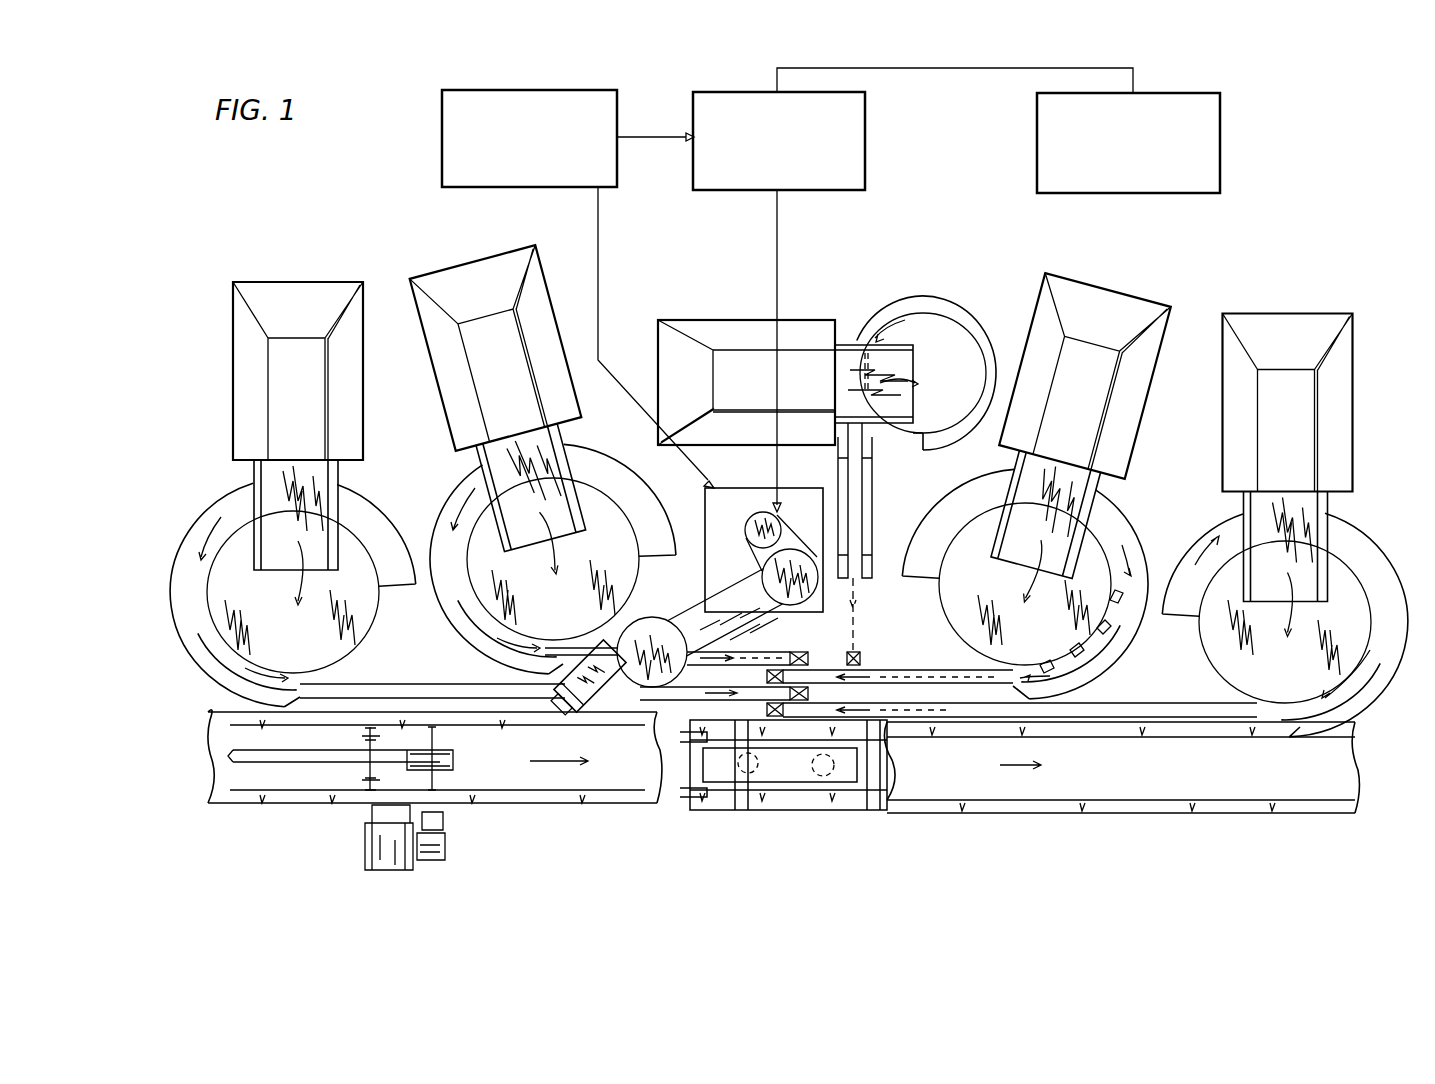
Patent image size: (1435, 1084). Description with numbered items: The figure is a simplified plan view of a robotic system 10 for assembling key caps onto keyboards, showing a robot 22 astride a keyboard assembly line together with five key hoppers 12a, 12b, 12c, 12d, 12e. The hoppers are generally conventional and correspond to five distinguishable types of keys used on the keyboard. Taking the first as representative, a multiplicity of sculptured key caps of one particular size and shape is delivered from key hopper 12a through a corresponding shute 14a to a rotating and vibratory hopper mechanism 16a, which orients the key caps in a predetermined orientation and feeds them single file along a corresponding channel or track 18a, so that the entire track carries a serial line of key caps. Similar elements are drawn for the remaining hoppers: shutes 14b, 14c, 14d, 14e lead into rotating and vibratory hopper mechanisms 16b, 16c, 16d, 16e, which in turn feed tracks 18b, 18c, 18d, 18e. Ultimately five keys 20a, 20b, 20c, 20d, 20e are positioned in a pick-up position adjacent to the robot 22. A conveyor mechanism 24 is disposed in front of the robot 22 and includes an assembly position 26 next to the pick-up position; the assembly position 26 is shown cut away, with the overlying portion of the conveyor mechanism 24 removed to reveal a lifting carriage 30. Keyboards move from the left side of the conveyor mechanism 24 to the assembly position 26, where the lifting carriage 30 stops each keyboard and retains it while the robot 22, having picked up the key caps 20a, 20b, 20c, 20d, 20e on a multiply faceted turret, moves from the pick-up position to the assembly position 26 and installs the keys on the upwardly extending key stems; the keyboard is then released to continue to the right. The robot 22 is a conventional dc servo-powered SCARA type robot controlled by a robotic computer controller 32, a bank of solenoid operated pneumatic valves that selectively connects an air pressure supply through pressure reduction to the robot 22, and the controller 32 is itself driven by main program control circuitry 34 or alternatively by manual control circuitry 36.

The robotic system 10 is at (228, 259).
The key hopper 12a is at (227, 369).
The key hopper 12b is at (585, 225).
The key hopper 12c is at (818, 320).
The key hopper 12d is at (1162, 288).
The key hopper 12e is at (1320, 300).
The shute 14a is at (265, 497).
The shute 14b is at (550, 472).
The shute 14c is at (897, 400).
The shute 14d is at (1071, 506).
The shute 14e is at (1300, 521).
The rotating and vibratory hopper mechanism 16a is at (198, 645).
The rotating and vibratory hopper mechanism 16b is at (480, 530).
The rotating and vibratory hopper mechanism 16c is at (932, 324).
The rotating and vibratory hopper mechanism 16d is at (1082, 574).
The rotating and vibratory hopper mechanism 16e is at (1296, 665).
The track 18a is at (412, 681).
The track 18b is at (752, 652).
The track 18c is at (855, 494).
The track 18d is at (990, 675).
The track 18e is at (902, 692).
The key 20a is at (808, 693).
The key 20b is at (815, 643).
The key 20c is at (862, 656).
The key 20d is at (767, 678).
The key 20e is at (767, 710).
The robot 22 is at (703, 592).
The conveyor mechanism 24 is at (236, 830).
The assembly position 26 is at (889, 786).
The lifting carriage 30 is at (784, 826).
The robotic computer controller 32 is at (862, 132).
The main program control circuitry 34 is at (442, 140).
The manual control circuitry 36 is at (1198, 130).